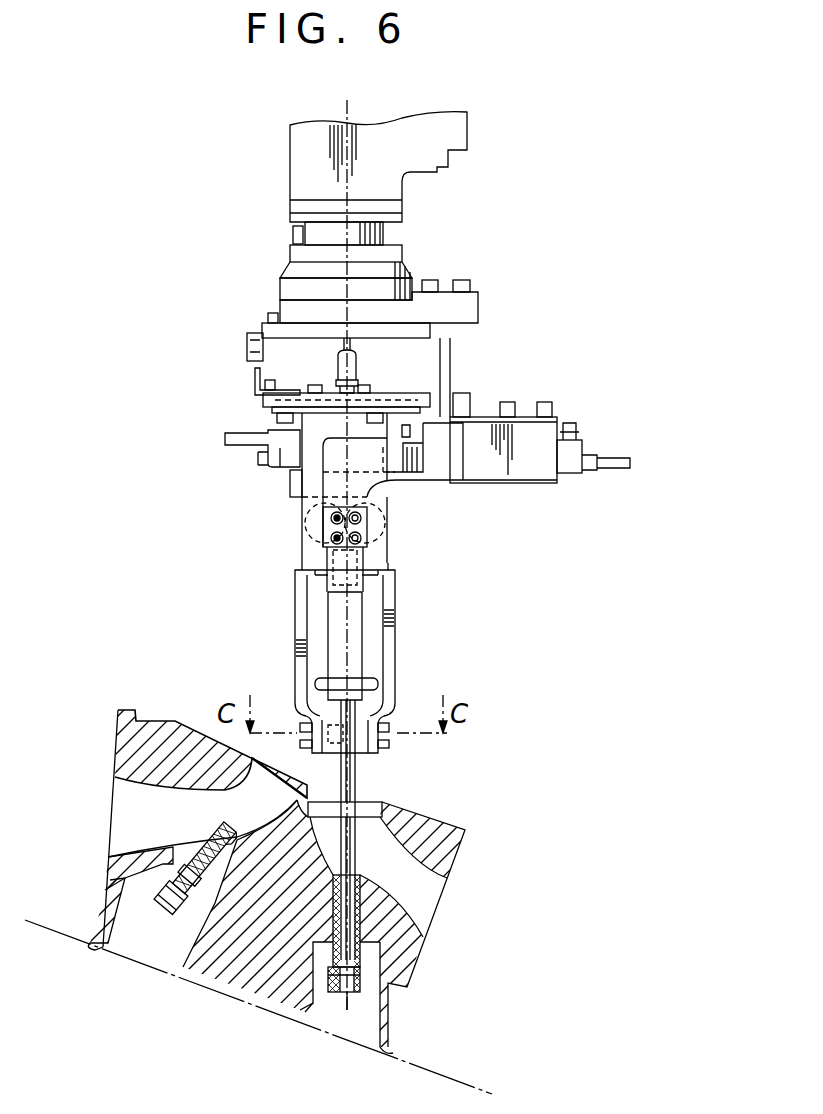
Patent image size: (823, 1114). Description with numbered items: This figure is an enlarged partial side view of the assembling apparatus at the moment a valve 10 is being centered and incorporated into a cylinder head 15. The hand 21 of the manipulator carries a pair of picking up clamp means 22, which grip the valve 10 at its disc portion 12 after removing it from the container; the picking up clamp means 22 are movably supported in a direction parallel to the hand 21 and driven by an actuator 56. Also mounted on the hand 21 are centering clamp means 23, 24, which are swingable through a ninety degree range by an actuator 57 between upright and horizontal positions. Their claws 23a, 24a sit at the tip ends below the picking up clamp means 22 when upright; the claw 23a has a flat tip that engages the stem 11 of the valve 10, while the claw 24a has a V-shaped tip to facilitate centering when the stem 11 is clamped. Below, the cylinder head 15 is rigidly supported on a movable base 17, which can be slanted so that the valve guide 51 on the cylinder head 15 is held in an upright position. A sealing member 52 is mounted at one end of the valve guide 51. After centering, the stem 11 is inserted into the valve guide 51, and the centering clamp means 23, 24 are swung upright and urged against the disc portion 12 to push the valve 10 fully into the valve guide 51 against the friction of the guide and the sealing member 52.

The hand 21 is at (290, 210).
The actuator 56 is at (480, 435).
The actuator 57 is at (297, 440).
The picking up clamp means 22 is at (355, 607).
The centering clamp means 23 is at (395, 625).
The centering clamp means 24 is at (297, 647).
The disc portion 12 is at (370, 673).
The claw 24a is at (330, 748).
The claw 23a is at (360, 753).
The valve 10 is at (362, 788).
The stem 11 is at (355, 842).
The cylinder head 15 is at (457, 847).
The valve guide 51 is at (237, 823).
The sealing member 52 is at (157, 907).
The movable base 17 is at (425, 1067).